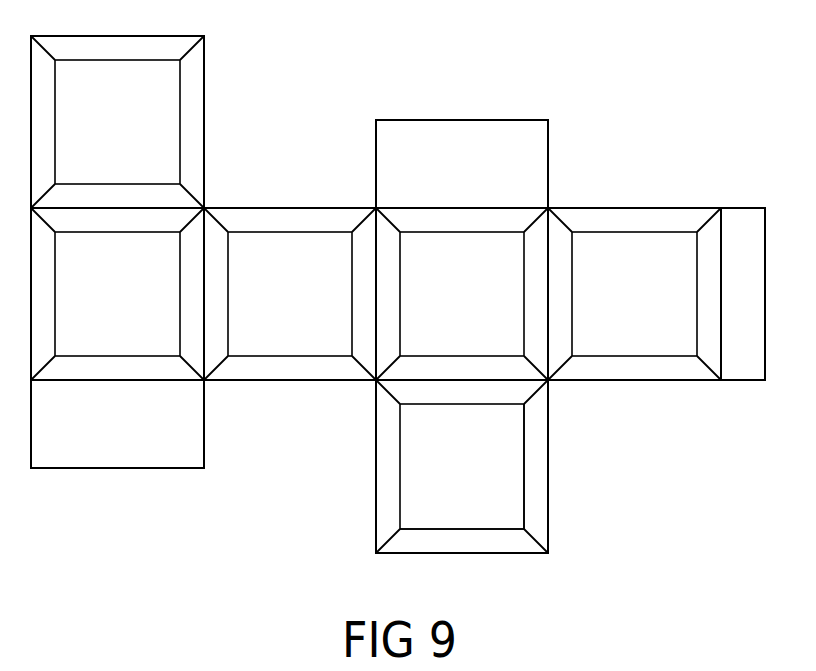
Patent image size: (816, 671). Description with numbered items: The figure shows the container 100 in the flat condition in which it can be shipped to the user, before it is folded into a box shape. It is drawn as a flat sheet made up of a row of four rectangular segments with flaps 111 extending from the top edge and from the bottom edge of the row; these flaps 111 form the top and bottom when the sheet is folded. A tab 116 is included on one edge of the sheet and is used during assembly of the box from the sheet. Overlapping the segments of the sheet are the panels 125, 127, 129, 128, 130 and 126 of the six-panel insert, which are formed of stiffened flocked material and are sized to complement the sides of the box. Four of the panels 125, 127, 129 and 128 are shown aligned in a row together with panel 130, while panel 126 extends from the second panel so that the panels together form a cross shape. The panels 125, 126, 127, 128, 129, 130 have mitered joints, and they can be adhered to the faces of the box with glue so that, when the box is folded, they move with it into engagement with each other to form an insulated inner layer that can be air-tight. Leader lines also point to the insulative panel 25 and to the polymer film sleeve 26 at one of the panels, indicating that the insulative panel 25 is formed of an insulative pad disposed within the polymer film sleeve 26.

The container 100 is at (594, 164).
The flaps 111 is at (443, 175).
The tab 116 is at (742, 223).
The panel 125 is at (97, 133).
The panel 126 is at (443, 478).
The panel 127 is at (97, 305).
The panel 128 is at (443, 305).
The panel 129 is at (270, 305).
The panel 130 is at (615, 305).
The insulative panel 25 is at (538, 514).
The polymer film sleeve 26 is at (516, 543).